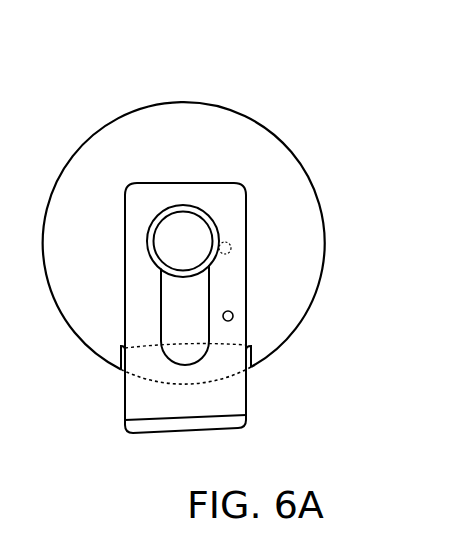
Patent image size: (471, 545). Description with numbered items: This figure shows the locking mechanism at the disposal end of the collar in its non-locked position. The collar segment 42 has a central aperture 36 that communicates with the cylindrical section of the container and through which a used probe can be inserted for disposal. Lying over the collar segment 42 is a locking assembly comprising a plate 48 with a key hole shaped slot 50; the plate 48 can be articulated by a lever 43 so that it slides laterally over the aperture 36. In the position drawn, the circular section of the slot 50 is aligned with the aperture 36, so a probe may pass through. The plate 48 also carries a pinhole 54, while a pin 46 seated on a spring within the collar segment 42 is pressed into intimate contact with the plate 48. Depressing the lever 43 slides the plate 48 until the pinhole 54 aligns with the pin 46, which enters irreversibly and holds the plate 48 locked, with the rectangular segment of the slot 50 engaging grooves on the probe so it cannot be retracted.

The collar segment 42 is at (177, 101).
The central aperture 36 is at (202, 217).
The key hole shaped slot 50 is at (213, 223).
The pin 46 is at (231, 250).
The pinhole 54 is at (234, 317).
The plate 48 is at (125, 325).
The lever 43 is at (216, 430).